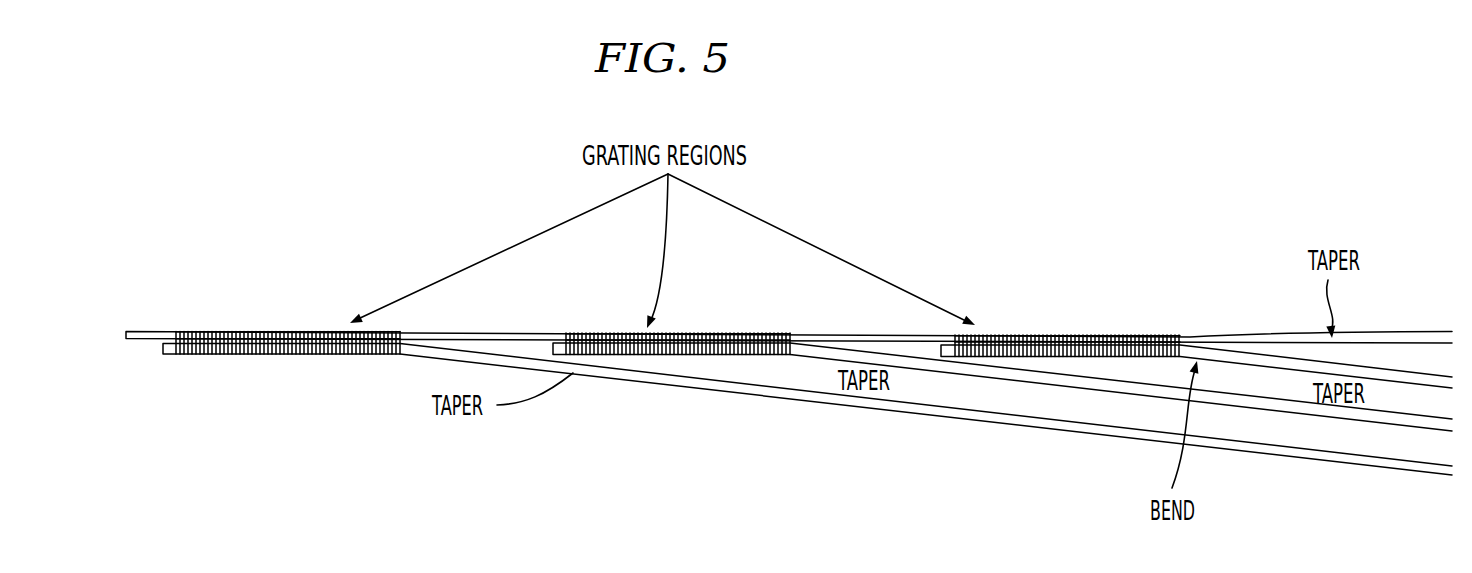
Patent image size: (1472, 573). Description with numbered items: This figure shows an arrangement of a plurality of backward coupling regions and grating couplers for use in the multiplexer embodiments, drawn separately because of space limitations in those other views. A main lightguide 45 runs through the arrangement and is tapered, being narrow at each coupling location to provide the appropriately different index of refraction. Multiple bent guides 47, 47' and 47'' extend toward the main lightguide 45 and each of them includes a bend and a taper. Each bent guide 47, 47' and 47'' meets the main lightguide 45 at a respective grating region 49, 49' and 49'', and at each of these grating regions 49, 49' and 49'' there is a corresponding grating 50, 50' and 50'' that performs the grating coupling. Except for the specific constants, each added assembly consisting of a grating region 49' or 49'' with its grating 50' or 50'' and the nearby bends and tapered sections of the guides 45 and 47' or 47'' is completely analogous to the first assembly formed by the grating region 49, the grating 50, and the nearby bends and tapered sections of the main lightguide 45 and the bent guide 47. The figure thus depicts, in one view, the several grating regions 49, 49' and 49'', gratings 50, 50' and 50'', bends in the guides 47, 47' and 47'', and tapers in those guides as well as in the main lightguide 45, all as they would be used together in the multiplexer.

The main lightguide 45 is at (1197, 336).
The bent guide 47 is at (1196, 370).
The bent guide 47' is at (1002, 387).
The bent guide 47'' is at (807, 410).
The grating region 49 is at (1067, 331).
The grating region 49' is at (678, 328).
The grating region 49'' is at (288, 326).
The grating 50 is at (1067, 307).
The grating 50' is at (678, 306).
The grating 50'' is at (288, 304).